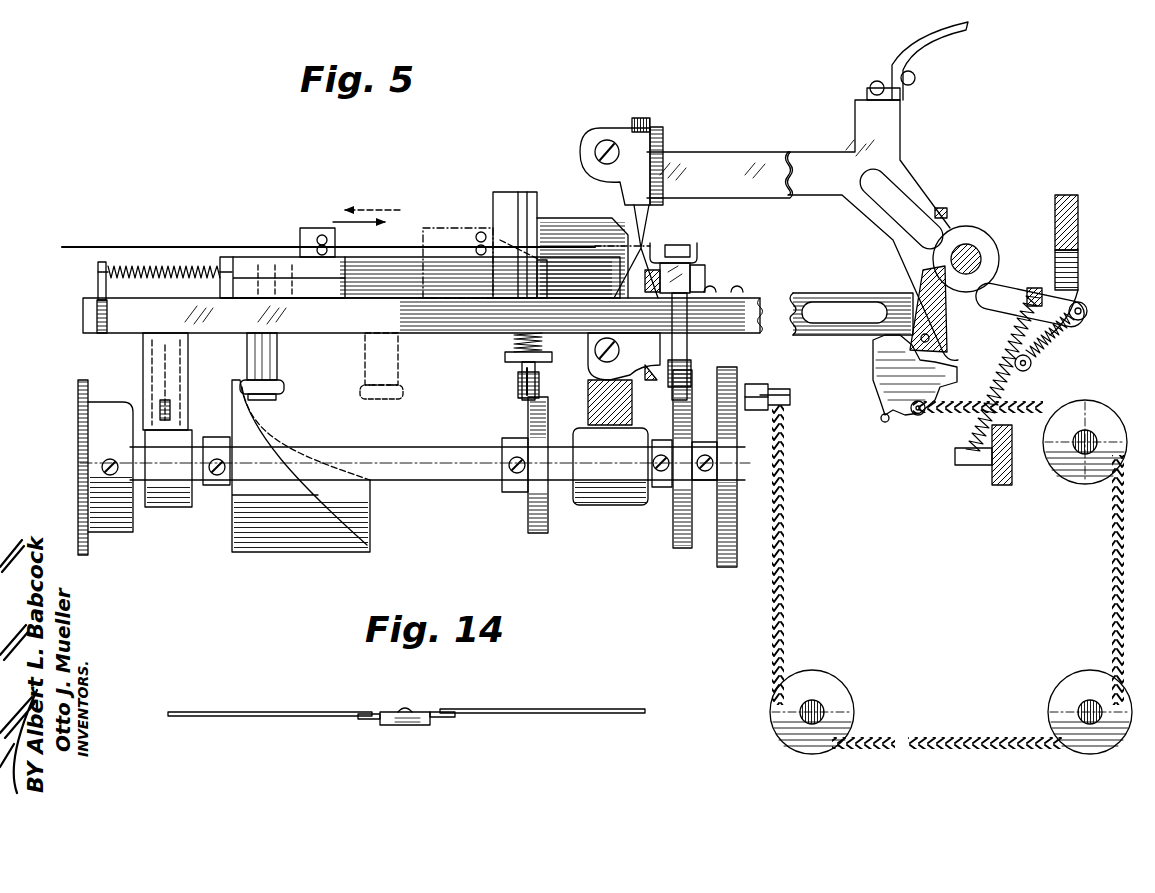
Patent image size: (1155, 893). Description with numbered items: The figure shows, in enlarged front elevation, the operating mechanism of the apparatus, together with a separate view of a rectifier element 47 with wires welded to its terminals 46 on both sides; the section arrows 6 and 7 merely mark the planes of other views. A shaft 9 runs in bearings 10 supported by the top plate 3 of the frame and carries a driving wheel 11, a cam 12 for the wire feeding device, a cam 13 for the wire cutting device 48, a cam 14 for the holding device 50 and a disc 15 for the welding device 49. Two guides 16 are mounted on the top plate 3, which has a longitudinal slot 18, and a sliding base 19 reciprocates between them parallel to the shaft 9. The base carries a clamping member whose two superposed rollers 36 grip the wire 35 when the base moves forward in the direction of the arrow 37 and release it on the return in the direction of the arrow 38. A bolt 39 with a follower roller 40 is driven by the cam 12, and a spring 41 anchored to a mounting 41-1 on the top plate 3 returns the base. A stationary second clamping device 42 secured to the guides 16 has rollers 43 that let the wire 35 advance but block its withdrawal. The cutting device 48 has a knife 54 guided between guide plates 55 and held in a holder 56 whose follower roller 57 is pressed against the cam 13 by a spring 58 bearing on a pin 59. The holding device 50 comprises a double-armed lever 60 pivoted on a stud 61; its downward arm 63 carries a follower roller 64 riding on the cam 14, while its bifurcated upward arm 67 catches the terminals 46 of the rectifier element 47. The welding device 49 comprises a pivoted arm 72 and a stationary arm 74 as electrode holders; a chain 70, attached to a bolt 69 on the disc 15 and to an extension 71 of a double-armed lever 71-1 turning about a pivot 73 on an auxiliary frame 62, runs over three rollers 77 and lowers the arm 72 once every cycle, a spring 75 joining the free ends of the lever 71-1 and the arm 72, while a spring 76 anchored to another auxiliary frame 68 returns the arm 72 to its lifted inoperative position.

In FIG. 5, the top plate 3 is at (83, 318).
In FIG. 5, the section line 6 is at (715, 100).
In FIG. 5, the section line 7 is at (70, 240).
In FIG. 5, the shaft 9 is at (432, 480).
In FIG. 5, the bearings 10 is at (200, 492).
In FIG. 5, the driving wheel 11 is at (120, 525).
In FIG. 5, the cam 12 is at (285, 540).
In FIG. 5, the cam 13 is at (528, 525).
In FIG. 5, the cam 14 is at (680, 530).
In FIG. 5, the disc 15 is at (732, 548).
In FIG. 5, the guides 16 is at (331, 297).
In FIG. 5, the longitudinal slot 18 is at (333, 333).
In FIG. 5, the sliding base 19 is at (288, 265).
In FIG. 5, the wire 35 is at (236, 247).
In FIG. 14, the wire 35 is at (284, 712).
In FIG. 5, the rollers 36 is at (328, 246).
In FIG. 5, the arrow 37 is at (336, 238).
In FIG. 5, the arrow 38 is at (352, 218).
In FIG. 5, the bolt 39 is at (274, 358).
In FIG. 5, the follower roller 40 is at (284, 389).
In FIG. 5, the spring 41 is at (183, 265).
In FIG. 5, the mounting 41-1 is at (104, 264).
In FIG. 5, the second clamping device 42 is at (458, 234).
In FIG. 5, the rollers 43 is at (481, 232).
In FIG. 5, the terminals 46 is at (678, 247).
In FIG. 14, the terminals 46 is at (368, 720).
In FIG. 5, the rectifier element 47 is at (697, 262).
In FIG. 14, the rectifier element 47 is at (408, 727).
In FIG. 5, the wire cutting device 48 is at (516, 190).
In FIG. 5, the welding device 49 is at (636, 116).
In FIG. 5, the holding device 50 is at (708, 256).
In FIG. 5, the knife 54 is at (517, 238).
In FIG. 5, the guide plates 55 is at (539, 216).
In FIG. 5, the holder 56 is at (514, 340).
In FIG. 5, the follower roller 57 is at (527, 392).
In FIG. 5, the spring 58 is at (510, 357).
In FIG. 5, the pin 59 is at (546, 365).
In FIG. 5, the double-armed lever 60 is at (706, 280).
In FIG. 5, the stud 61 is at (665, 262).
In FIG. 5, the auxiliary frame 62 is at (1074, 200).
In FIG. 5, the downward extending arm 63 is at (676, 362).
In FIG. 5, the follower roller 64 is at (692, 376).
In FIG. 5, the upwards extending arm 67 is at (703, 242).
In FIG. 5, the auxiliary frame 68 is at (1008, 480).
In FIG. 5, the bolt 69 is at (779, 383).
In FIG. 5, the chain 70 is at (783, 612).
In FIG. 5, the extension 71 is at (892, 367).
In FIG. 5, the double-armed lever 71-1 is at (1013, 288).
In FIG. 5, the pivoted arm 72 is at (730, 163).
In FIG. 5, the pivot 73 is at (970, 250).
In FIG. 5, the stationary arm 74 is at (765, 305).
In FIG. 5, the spring 75 is at (1036, 345).
In FIG. 5, the spring 76 is at (1002, 392).
In FIG. 5, the rollers 77 is at (1100, 467).